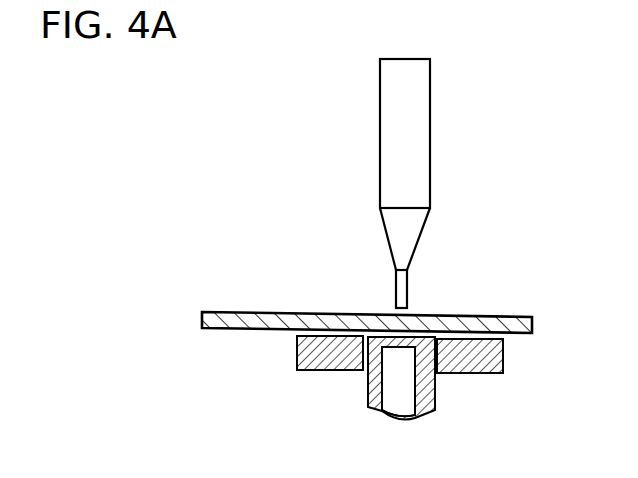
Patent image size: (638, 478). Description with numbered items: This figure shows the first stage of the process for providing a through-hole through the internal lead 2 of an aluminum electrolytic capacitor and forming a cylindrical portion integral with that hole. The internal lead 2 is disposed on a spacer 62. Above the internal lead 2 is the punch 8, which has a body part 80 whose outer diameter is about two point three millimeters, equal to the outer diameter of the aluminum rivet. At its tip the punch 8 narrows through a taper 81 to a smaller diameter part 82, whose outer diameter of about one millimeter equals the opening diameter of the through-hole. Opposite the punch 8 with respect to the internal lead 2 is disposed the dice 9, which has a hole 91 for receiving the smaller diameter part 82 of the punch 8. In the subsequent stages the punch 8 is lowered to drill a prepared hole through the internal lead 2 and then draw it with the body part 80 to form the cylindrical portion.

The internal lead 2 is at (243, 315).
The punch 8 is at (386, 183).
The body part 80 is at (430, 125).
The taper 81 is at (383, 232).
The smaller diameter part 82 is at (408, 292).
The dice 9 is at (396, 407).
The hole 91 is at (392, 342).
The spacer 62 is at (487, 373).